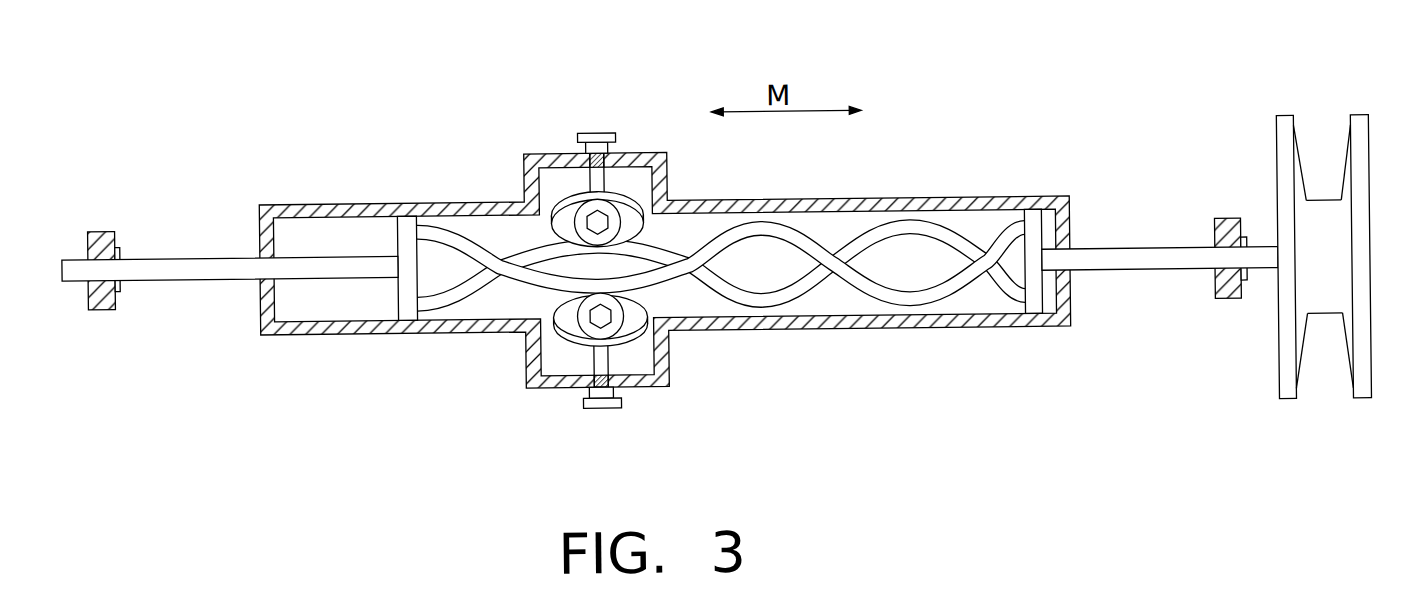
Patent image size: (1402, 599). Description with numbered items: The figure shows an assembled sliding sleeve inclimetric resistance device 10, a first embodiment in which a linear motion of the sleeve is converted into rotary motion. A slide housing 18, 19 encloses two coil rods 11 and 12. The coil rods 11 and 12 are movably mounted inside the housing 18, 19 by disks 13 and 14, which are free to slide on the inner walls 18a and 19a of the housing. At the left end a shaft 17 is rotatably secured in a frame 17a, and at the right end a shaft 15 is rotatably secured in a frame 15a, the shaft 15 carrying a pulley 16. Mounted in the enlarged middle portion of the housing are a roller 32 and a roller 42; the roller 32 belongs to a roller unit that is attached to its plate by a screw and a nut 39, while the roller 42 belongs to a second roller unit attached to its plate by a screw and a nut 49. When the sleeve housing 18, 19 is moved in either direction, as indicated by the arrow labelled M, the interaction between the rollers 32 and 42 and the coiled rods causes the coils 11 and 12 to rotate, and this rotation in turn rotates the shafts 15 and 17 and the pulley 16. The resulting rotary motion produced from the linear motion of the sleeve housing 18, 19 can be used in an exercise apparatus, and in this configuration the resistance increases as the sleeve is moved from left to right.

The sliding sleeve inclimetric resistance device 10 is at (290, 475).
The coil rod 11 is at (912, 237).
The coil rod 12 is at (920, 298).
The disk 13 is at (1032, 229).
The disk 14 is at (410, 300).
The shaft 15 is at (1137, 267).
The frame 15a is at (1228, 228).
The pulley 16 is at (1288, 151).
The shaft 17 is at (183, 257).
The frame 17a is at (107, 228).
The slide housing 18 is at (785, 204).
The inner wall 18a is at (352, 239).
The slide housing 19 is at (785, 336).
The inner wall 19a is at (348, 298).
The roller 32 is at (570, 322).
The nut 39 is at (595, 417).
The roller 42 is at (565, 218).
The nut 49 is at (597, 136).